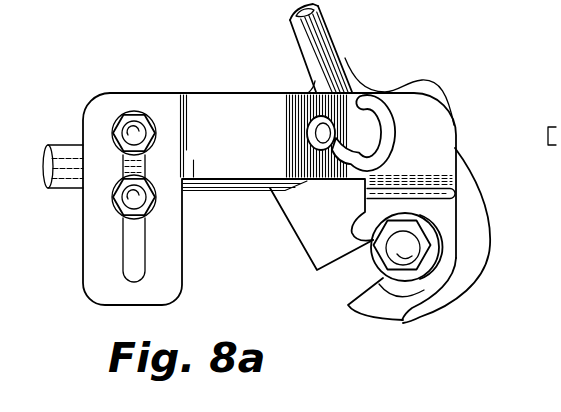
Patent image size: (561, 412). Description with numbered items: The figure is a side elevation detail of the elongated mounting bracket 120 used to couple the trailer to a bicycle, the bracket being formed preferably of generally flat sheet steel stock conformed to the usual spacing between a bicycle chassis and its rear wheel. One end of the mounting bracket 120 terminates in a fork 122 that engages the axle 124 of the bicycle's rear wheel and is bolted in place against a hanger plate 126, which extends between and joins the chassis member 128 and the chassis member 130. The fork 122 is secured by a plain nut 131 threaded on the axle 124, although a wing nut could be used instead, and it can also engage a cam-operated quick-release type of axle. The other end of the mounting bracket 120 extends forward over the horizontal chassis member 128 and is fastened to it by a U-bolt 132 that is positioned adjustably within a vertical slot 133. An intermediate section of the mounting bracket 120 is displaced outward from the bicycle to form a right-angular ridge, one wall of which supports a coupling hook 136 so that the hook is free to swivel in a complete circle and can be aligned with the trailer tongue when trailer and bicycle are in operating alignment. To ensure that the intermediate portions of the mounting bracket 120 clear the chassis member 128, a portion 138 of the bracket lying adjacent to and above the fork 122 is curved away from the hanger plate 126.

The mounting bracket 120 is at (245, 93).
The fork 122 is at (409, 324).
The axle 124 is at (408, 253).
The hanger plate 126 is at (475, 233).
The chassis member 128 is at (261, 190).
The chassis member 130 is at (324, 40).
The plain nut 131 is at (411, 291).
The U-bolt 132 is at (130, 133).
The vertical slot 133 is at (129, 249).
The coupling hook 136 is at (389, 128).
The curved portion 138 is at (440, 196).